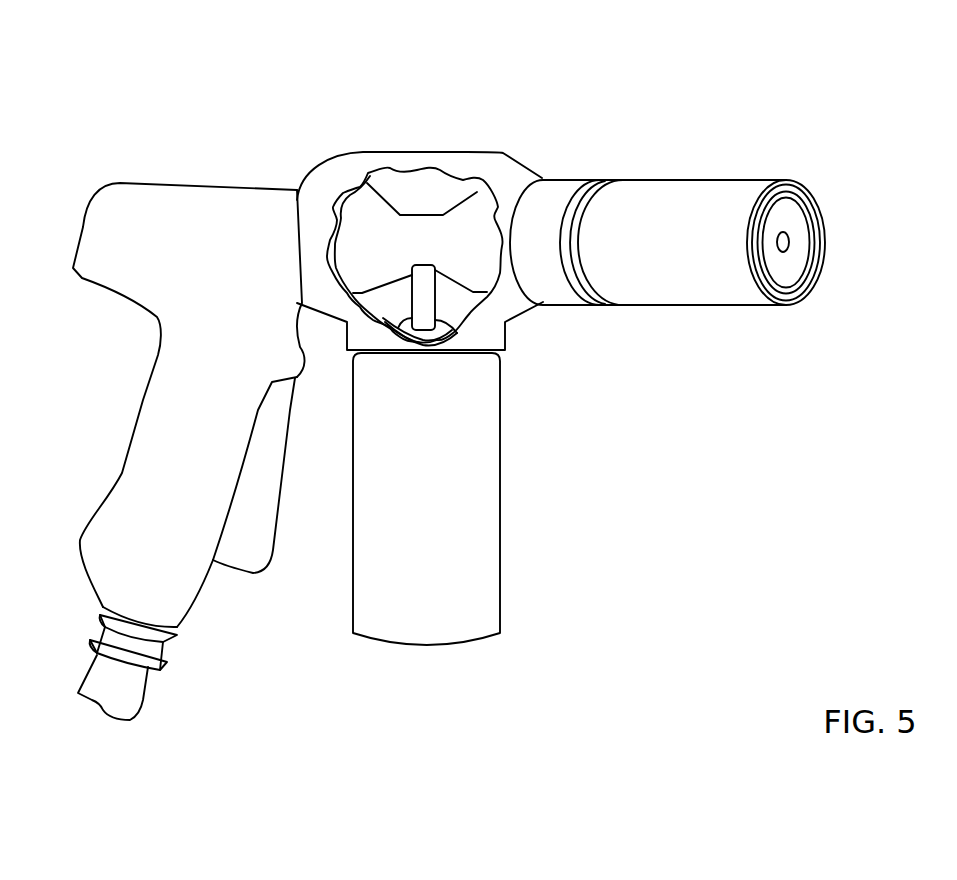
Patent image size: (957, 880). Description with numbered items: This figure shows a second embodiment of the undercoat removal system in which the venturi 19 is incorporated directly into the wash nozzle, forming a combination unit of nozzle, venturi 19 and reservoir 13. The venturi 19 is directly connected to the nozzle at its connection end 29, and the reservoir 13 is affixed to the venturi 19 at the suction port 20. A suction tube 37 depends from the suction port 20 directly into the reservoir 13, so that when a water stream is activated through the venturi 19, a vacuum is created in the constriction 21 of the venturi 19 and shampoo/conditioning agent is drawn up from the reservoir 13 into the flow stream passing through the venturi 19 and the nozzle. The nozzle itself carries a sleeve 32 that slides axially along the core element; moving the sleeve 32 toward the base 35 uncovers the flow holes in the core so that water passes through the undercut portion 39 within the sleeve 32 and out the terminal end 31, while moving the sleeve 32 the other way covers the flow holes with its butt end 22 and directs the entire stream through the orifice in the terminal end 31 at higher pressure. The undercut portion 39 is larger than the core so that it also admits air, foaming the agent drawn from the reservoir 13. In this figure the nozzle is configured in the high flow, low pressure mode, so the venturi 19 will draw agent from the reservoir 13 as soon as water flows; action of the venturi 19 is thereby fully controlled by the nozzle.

The venturi 19 is at (257, 133).
The reservoir 13 is at (500, 593).
The suction port 20 is at (423, 300).
The constriction 21 is at (413, 222).
The butt end 22 is at (643, 178).
The connection end 29 is at (518, 196).
The terminal end 31 is at (788, 268).
The sleeve 32 is at (732, 193).
The base 35 is at (568, 193).
The suction tube 37 is at (428, 330).
The undercut portion 39 is at (788, 192).